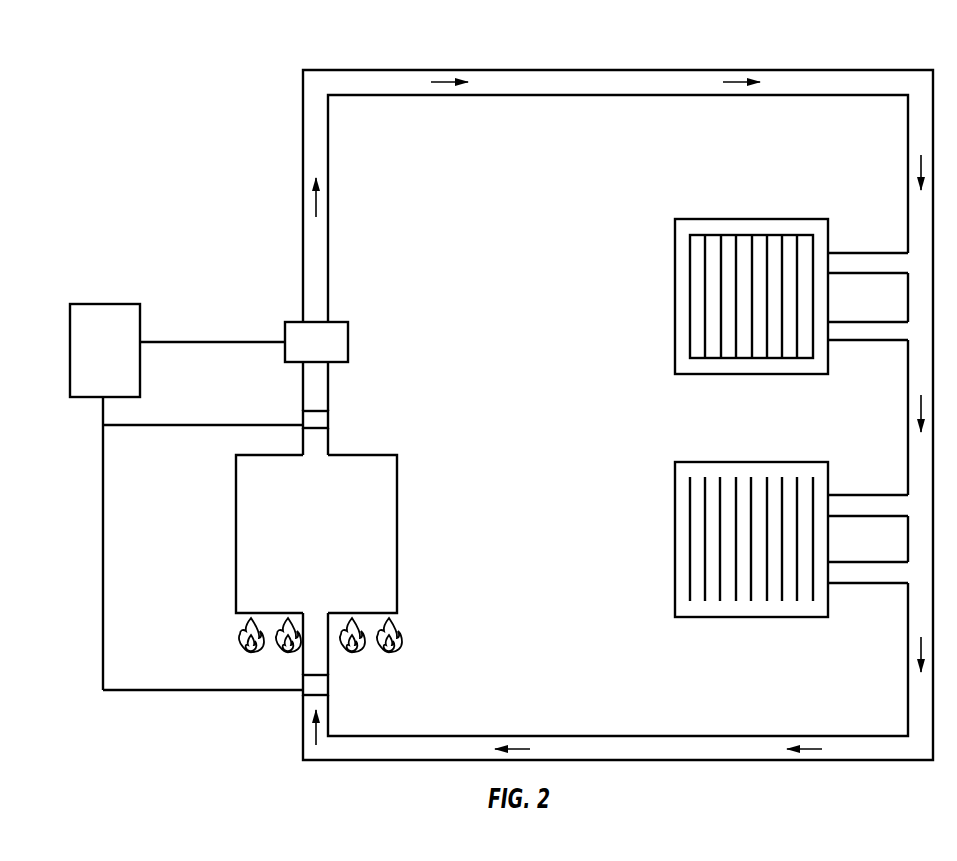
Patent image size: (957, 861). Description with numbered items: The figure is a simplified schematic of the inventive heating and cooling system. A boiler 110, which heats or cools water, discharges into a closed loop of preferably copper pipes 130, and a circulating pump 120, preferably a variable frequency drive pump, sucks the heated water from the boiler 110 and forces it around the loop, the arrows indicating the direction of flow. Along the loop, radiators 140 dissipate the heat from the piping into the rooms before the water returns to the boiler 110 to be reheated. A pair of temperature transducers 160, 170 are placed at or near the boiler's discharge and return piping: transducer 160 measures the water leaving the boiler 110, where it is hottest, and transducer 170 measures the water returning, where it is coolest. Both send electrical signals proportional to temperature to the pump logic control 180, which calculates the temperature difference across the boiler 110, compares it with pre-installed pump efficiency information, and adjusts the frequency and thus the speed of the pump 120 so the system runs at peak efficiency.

The boiler 110 is at (319, 553).
The circulating pump 120 is at (316, 342).
The pipes 130 is at (628, 70).
The radiator 140 is at (675, 295).
The temperature transducer 160 is at (330, 425).
The temperature transducer 170 is at (330, 690).
The pump logic control (PLC) 180 is at (186, 497).